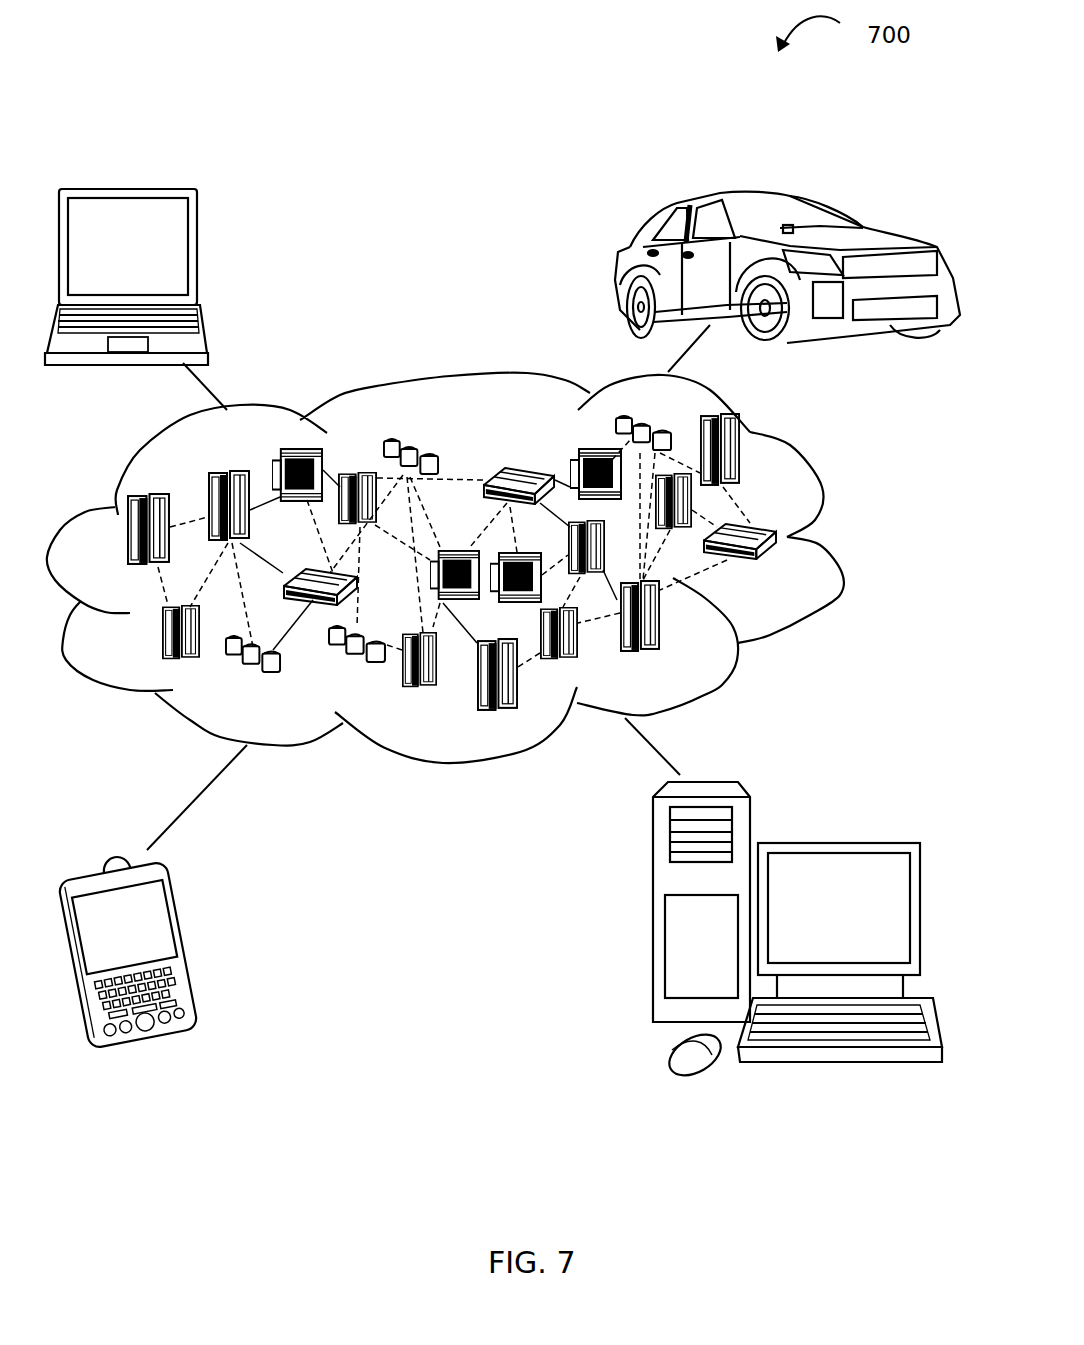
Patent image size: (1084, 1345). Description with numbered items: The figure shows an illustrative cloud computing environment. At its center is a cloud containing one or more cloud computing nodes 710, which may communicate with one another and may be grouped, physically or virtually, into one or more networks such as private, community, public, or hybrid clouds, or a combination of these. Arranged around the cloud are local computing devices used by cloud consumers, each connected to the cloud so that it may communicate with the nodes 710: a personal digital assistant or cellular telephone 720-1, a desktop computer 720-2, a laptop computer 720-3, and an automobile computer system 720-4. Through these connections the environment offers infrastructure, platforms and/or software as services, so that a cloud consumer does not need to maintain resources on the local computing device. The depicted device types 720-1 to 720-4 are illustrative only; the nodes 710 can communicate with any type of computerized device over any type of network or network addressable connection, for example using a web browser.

The cloud computing nodes 710 is at (782, 572).
The personal digital assistant or cellular telephone 720-1 is at (188, 942).
The desktop computer 720-2 is at (837, 843).
The laptop computer 720-3 is at (199, 250).
The automobile computer system 720-4 is at (620, 268).